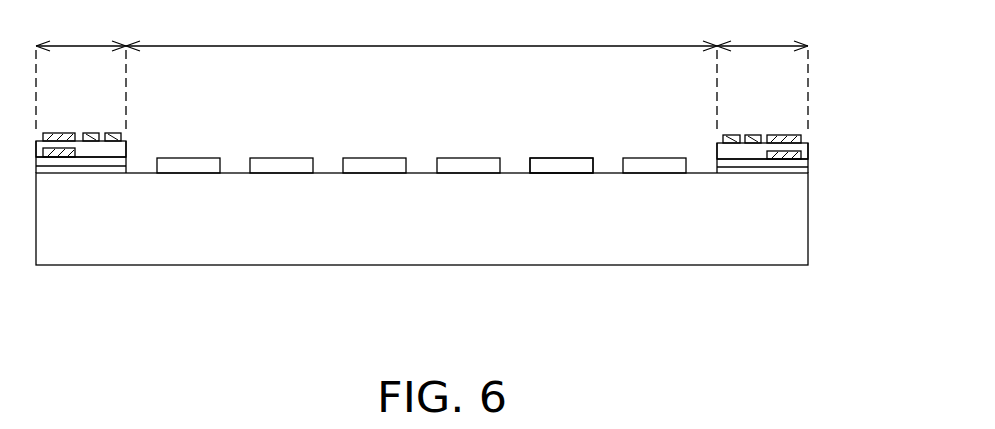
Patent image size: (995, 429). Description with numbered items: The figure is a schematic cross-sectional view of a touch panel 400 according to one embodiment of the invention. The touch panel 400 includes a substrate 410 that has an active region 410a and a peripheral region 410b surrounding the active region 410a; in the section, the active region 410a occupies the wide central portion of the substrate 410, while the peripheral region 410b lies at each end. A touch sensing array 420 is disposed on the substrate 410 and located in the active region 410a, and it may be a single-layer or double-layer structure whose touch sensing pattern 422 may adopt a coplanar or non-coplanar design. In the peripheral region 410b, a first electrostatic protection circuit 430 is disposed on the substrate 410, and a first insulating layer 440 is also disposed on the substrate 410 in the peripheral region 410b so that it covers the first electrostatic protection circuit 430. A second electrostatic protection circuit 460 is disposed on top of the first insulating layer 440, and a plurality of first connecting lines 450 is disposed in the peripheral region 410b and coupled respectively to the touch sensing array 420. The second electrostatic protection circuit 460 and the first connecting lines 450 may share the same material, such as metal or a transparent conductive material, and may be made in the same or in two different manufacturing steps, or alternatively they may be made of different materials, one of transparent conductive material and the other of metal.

The touch panel 400 is at (808, 317).
The substrate 410 is at (796, 221).
The active region 410a is at (421, 33).
The peripheral region 410b is at (422, 74).
The touch sensing array 420 is at (550, 150).
The touch sensing pattern 422 is at (580, 167).
The first electrostatic protection circuit 430 is at (808, 153).
The first insulating layer 440 is at (808, 147).
The first connecting lines 450 is at (757, 135).
The second electrostatic protection circuit 460 is at (790, 135).